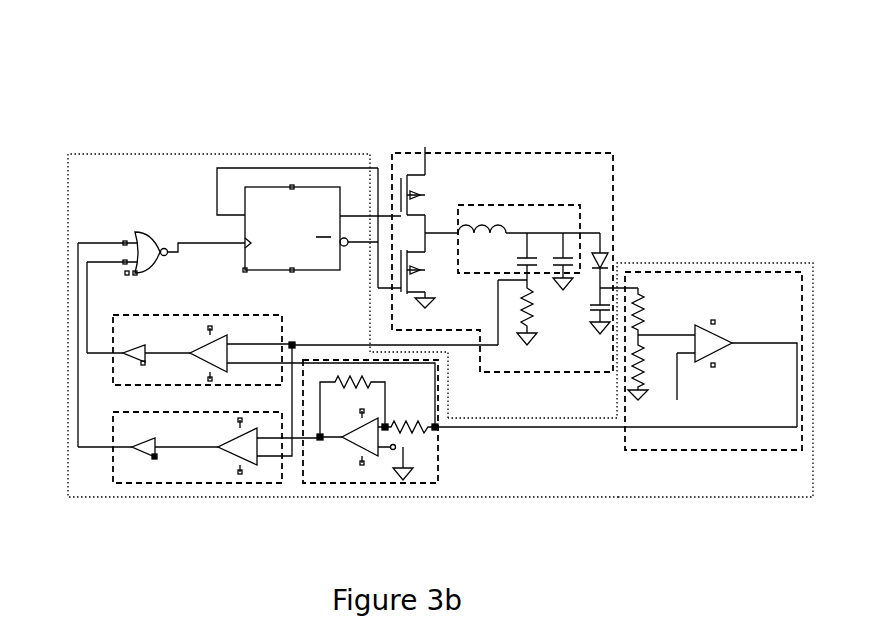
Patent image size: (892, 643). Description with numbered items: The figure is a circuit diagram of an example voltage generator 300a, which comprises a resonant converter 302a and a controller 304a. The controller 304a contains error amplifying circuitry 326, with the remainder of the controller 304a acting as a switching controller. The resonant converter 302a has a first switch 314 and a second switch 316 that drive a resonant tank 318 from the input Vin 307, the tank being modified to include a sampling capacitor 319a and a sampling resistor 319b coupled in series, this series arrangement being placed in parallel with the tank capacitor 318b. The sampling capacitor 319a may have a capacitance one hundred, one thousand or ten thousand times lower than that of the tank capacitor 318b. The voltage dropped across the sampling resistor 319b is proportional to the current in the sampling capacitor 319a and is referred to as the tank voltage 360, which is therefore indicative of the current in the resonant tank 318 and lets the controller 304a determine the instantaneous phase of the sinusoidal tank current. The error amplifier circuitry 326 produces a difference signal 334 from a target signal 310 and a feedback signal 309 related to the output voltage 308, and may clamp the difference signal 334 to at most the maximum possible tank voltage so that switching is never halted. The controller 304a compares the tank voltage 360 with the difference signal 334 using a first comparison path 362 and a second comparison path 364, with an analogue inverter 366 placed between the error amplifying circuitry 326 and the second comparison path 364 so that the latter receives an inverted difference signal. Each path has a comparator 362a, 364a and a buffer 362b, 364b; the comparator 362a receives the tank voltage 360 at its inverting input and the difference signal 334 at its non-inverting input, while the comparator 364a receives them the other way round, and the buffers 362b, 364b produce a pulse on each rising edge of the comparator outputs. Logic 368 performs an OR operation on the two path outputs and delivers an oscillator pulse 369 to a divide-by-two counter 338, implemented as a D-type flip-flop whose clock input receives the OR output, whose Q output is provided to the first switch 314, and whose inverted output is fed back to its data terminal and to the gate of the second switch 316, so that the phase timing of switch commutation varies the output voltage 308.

The voltage generator 300a is at (782, 82).
The resonant converter 302a is at (614, 180).
The controller 304a is at (245, 152).
The input voltage Vin 307 is at (425, 147).
The output voltage 308 is at (637, 288).
The feedback signal 309 is at (670, 332).
The target signal 310 is at (677, 372).
The first switch 314 is at (404, 175).
The second switch 316 is at (425, 268).
The resonant tank 318 is at (492, 205).
The tank capacitor 318b is at (568, 258).
The sampling capacitor 319a is at (535, 258).
The sampling resistor 319b is at (535, 315).
The error amplifying circuitry 326 is at (725, 272).
The difference signal 334 is at (557, 427).
The divide-by-two counter 338 is at (302, 193).
The tank voltage 360 is at (458, 345).
The first comparison path 362 is at (113, 385).
The comparator 362a is at (227, 372).
The buffer 362b is at (137, 357).
The second comparison path 364 is at (282, 483).
The comparator 364a is at (227, 455).
The buffer 364b is at (155, 455).
The analogue inverter 366 is at (438, 483).
The logic 368 is at (136, 232).
The oscillator pulse 369 is at (189, 242).